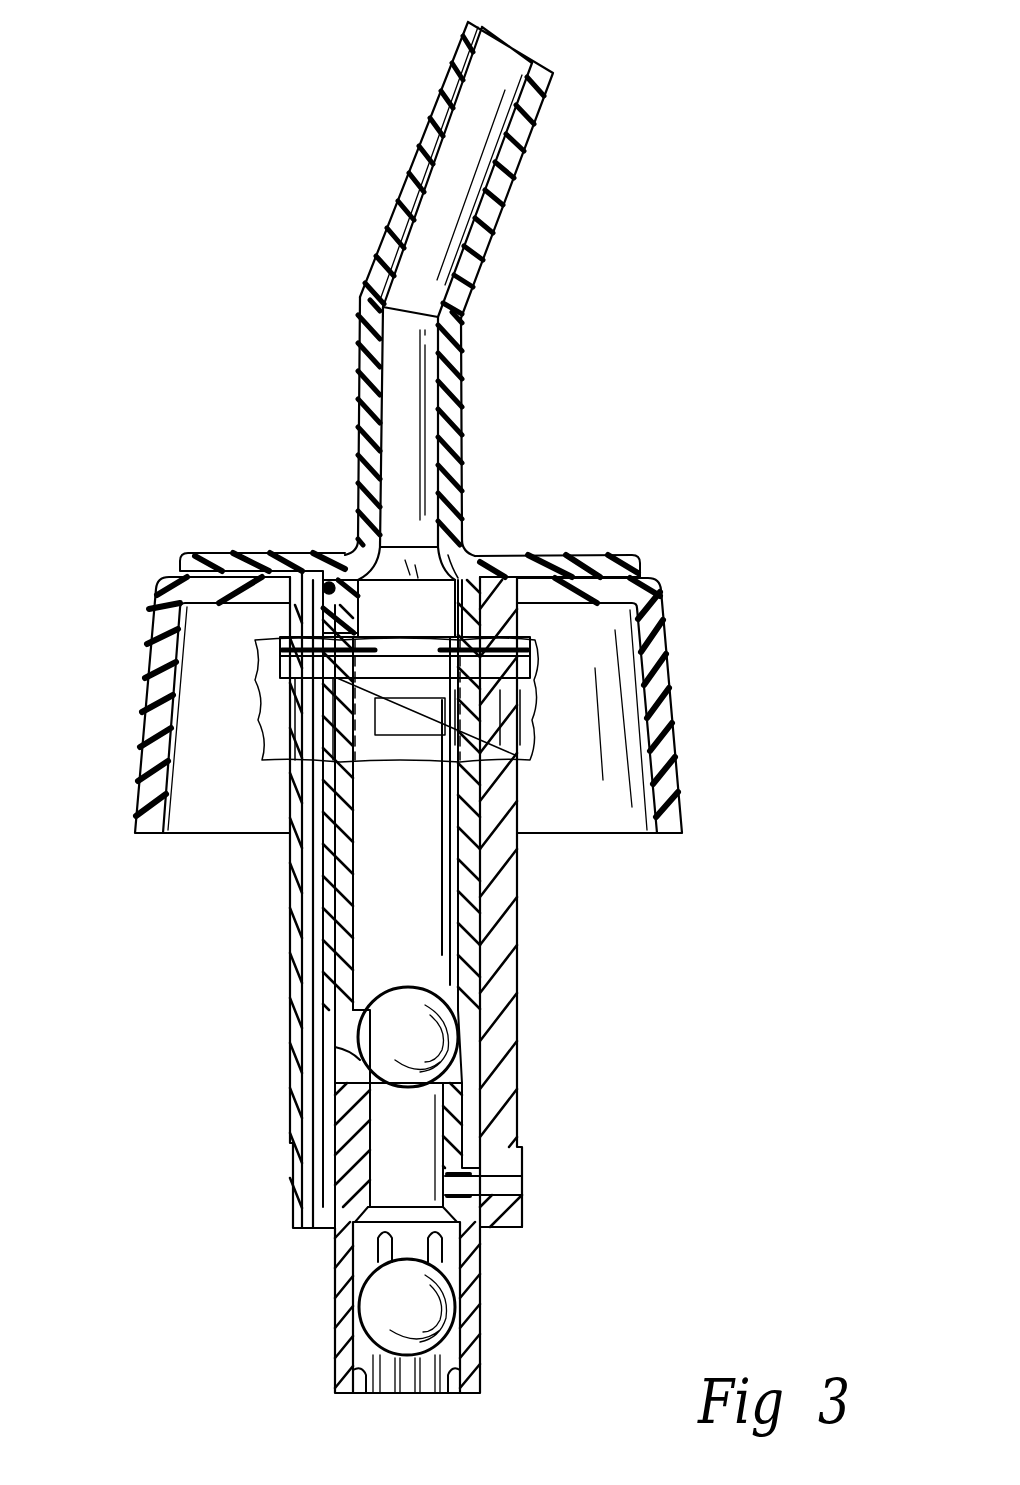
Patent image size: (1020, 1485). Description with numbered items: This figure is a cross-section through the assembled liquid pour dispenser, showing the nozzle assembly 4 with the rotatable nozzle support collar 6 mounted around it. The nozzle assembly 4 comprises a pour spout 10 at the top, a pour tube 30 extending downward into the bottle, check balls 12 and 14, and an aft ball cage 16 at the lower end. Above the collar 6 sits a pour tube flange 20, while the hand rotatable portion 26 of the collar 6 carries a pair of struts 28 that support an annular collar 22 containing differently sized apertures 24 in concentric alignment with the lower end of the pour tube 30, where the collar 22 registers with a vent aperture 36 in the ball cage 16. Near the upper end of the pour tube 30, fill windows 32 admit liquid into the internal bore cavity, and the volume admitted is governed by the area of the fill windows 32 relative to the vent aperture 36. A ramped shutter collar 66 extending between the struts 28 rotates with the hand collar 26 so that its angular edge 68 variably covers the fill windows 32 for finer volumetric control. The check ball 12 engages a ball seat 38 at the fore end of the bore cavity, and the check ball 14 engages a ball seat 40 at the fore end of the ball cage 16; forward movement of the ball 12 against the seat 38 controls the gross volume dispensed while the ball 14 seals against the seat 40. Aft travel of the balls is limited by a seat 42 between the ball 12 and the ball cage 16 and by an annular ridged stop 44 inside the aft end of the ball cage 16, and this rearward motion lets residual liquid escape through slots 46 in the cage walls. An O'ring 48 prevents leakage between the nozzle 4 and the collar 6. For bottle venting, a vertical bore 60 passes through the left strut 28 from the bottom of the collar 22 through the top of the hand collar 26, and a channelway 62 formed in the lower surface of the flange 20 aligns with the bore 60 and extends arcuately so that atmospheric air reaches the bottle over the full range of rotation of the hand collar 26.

The pour spout 10 is at (510, 200).
The nozzle assembly 4 is at (470, 437).
The O'ring 48 is at (329, 580).
The ball seat 38 is at (462, 558).
The pour tube flange 20 is at (640, 560).
The channelway 62 is at (180, 566).
The hand rotatable portion 26 is at (135, 745).
The rotatable nozzle support or collar 6 is at (688, 737).
The fill apertures or windows 32 is at (408, 732).
The shutter collar 66 is at (487, 717).
The angular edge 68 is at (455, 722).
The vertical bore 60 is at (315, 880).
The pour tube 30 is at (472, 868).
The struts 28 is at (517, 950).
The seat 42 is at (335, 1047).
The ball seat 40 is at (360, 1218).
The vent aperture 36 is at (440, 1188).
The apertures 24 is at (522, 1187).
The annular collar 22 is at (522, 1215).
The slots 46 is at (520, 1258).
The check ball 14 is at (410, 1308).
The check ball 12 is at (410, 1040).
The ball cage 16 is at (480, 1330).
The annular ridged projection or stop 44 is at (358, 1380).